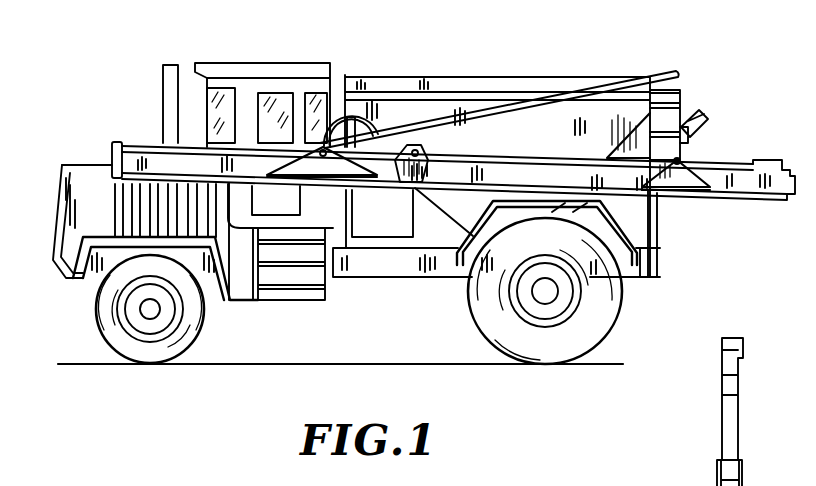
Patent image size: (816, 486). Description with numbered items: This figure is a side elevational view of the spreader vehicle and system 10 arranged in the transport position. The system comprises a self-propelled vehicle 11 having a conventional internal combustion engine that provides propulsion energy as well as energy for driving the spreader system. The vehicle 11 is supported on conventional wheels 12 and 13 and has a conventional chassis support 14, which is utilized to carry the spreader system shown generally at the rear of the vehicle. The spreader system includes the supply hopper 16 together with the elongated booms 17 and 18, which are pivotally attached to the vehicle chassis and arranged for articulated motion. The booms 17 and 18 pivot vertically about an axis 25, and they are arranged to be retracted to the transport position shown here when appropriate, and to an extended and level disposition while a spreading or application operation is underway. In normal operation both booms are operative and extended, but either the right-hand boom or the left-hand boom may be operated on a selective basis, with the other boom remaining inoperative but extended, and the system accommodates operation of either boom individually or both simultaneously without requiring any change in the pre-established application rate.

The spreader vehicle and system 10 is at (556, 64).
The self-propelled vehicle 11 is at (257, 63).
The wheel 12 is at (94, 317).
The wheel 13 is at (470, 314).
The chassis support 14 is at (380, 281).
The supply hopper 16 is at (582, 143).
The boom 17 is at (757, 199).
The boom 18 is at (740, 433).
The axis 25 is at (680, 158).